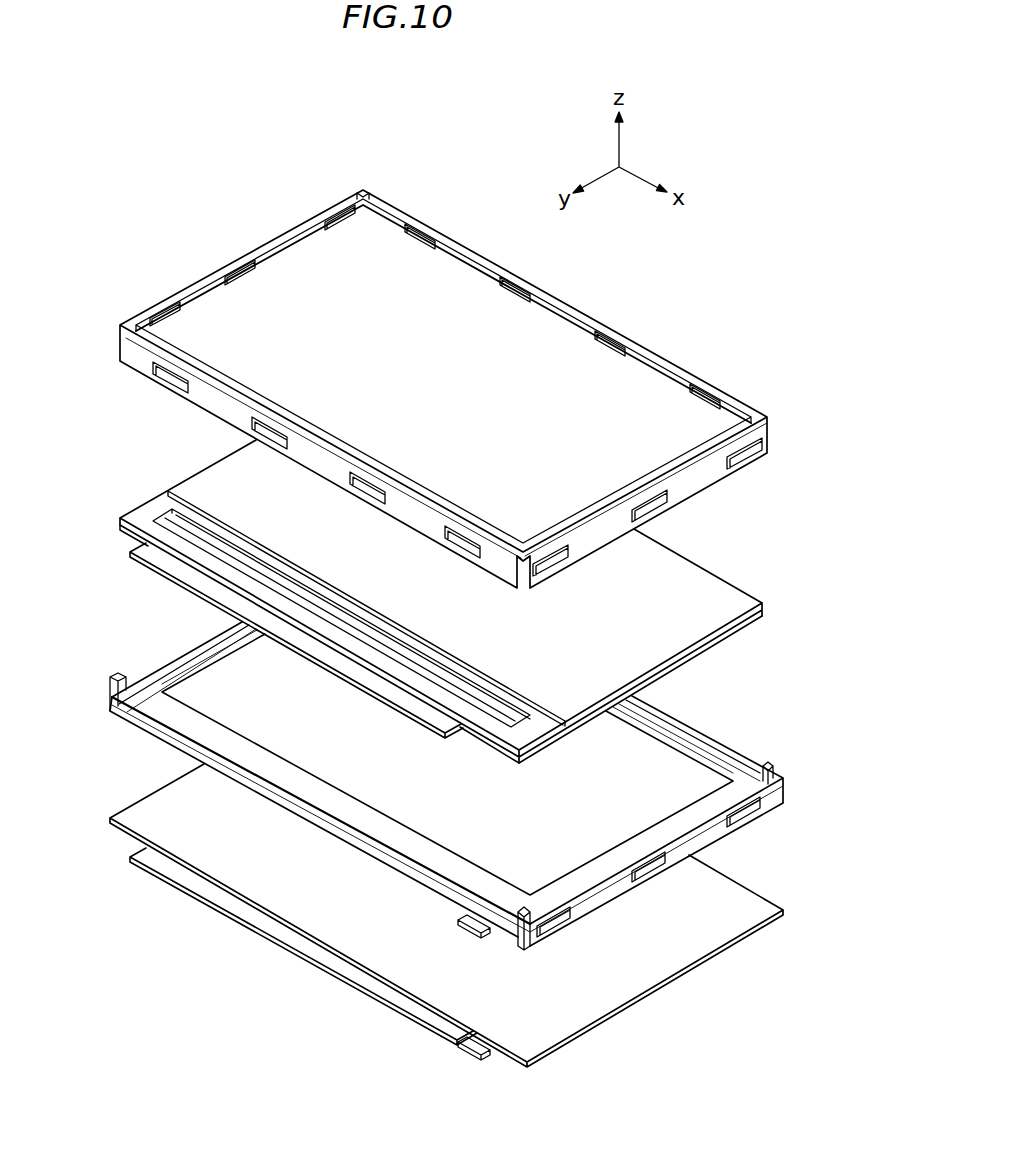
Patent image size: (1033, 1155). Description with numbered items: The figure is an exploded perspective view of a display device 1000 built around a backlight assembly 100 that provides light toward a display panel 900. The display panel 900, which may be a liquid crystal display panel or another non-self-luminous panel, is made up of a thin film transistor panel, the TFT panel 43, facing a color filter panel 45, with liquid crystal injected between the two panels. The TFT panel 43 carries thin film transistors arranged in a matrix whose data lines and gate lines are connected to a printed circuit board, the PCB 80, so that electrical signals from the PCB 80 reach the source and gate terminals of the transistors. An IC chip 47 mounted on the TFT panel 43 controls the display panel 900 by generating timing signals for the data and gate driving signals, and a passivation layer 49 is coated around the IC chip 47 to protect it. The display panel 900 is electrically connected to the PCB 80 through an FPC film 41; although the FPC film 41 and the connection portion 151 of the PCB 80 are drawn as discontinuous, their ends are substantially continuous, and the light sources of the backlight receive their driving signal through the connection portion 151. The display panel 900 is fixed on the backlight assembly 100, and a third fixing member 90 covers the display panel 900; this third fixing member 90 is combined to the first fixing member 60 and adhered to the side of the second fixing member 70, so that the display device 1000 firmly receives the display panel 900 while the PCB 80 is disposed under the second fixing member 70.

The display device 1000 is at (391, 117).
The third fixing member 90 is at (767, 430).
The display panel 900 is at (431, 601).
The passivation layer 49 is at (152, 508).
The IC chip 47 is at (218, 547).
The color filter panel 45 is at (763, 605).
The TFT panel 43 is at (764, 613).
The FPC film 41 is at (150, 565).
The backlight assembly 100 is at (434, 786).
The first fixing member 60 is at (755, 808).
The second fixing member 70 is at (708, 835).
The connection portion 151 is at (458, 930).
The PCB 80 is at (581, 1014).